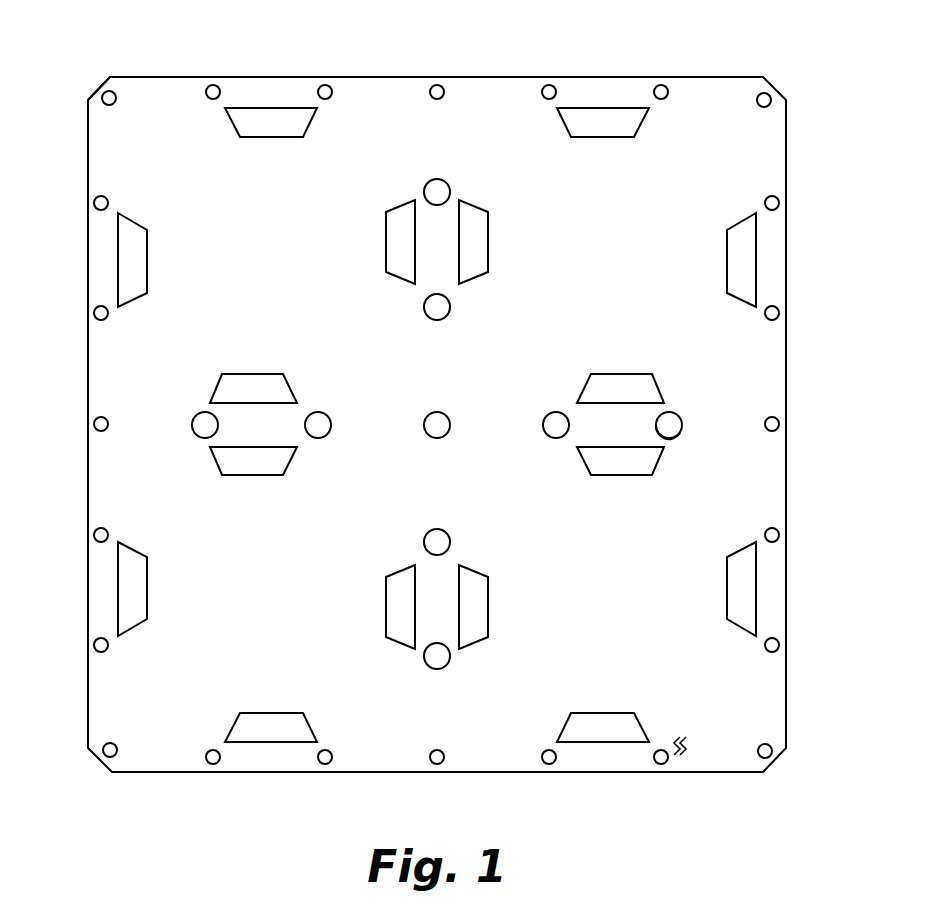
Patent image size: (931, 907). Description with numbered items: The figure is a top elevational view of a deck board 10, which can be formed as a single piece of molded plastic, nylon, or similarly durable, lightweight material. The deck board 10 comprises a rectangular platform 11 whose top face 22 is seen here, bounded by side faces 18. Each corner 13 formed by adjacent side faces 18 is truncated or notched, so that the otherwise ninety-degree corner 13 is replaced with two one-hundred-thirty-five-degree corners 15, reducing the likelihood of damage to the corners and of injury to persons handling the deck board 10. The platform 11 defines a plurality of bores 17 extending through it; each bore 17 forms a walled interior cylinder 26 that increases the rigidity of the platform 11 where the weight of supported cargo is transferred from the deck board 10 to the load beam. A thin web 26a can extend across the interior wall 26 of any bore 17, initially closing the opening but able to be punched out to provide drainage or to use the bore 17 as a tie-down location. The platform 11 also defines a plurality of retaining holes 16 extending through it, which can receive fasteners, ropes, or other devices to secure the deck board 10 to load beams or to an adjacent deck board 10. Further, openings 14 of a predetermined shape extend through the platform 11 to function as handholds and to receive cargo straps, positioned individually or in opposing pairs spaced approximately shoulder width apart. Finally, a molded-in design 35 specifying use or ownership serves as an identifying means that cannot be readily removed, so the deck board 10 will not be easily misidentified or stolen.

The deck board 10 is at (106, 155).
The platform 11 is at (88, 270).
The corner 13 is at (100, 85).
The handhold opening 14 is at (245, 108).
The 135° corner 15 is at (108, 77).
The retaining hole 16 is at (325, 85).
The bore 17 is at (437, 179).
The side face 18 is at (84, 377).
The top face 22 is at (152, 500).
The walled interior cylinder 26 is at (676, 419).
The web 26a is at (678, 436).
The design 35 is at (713, 763).